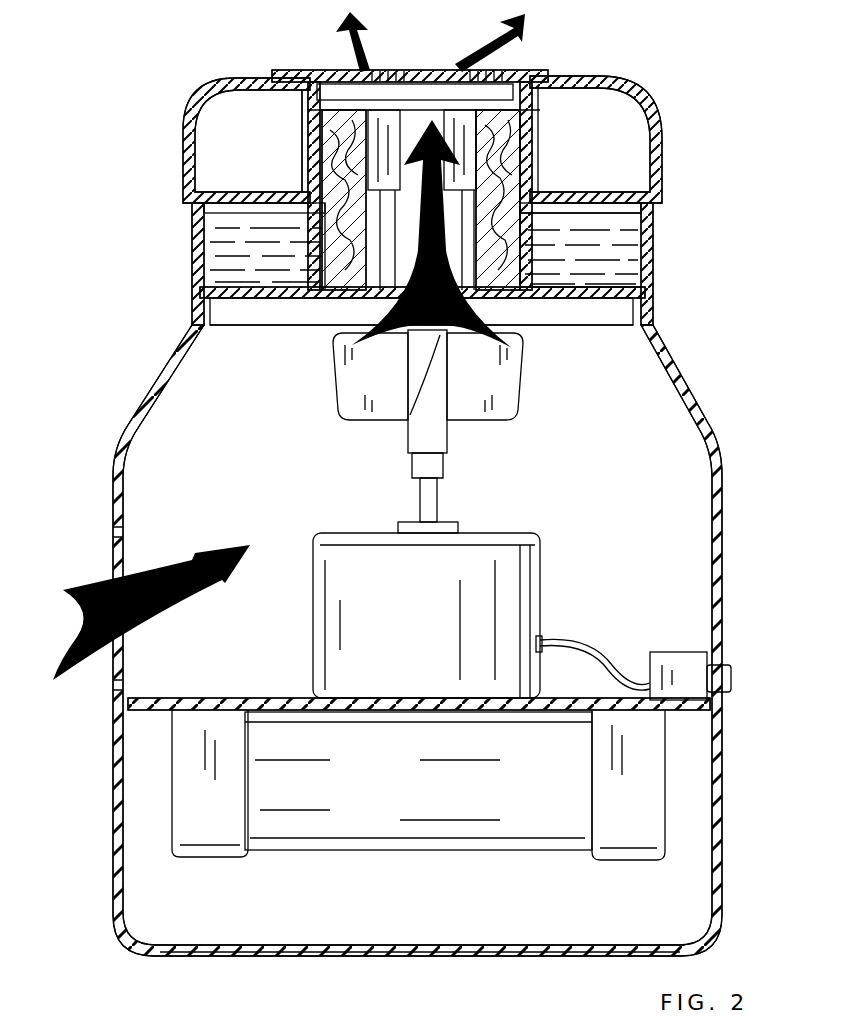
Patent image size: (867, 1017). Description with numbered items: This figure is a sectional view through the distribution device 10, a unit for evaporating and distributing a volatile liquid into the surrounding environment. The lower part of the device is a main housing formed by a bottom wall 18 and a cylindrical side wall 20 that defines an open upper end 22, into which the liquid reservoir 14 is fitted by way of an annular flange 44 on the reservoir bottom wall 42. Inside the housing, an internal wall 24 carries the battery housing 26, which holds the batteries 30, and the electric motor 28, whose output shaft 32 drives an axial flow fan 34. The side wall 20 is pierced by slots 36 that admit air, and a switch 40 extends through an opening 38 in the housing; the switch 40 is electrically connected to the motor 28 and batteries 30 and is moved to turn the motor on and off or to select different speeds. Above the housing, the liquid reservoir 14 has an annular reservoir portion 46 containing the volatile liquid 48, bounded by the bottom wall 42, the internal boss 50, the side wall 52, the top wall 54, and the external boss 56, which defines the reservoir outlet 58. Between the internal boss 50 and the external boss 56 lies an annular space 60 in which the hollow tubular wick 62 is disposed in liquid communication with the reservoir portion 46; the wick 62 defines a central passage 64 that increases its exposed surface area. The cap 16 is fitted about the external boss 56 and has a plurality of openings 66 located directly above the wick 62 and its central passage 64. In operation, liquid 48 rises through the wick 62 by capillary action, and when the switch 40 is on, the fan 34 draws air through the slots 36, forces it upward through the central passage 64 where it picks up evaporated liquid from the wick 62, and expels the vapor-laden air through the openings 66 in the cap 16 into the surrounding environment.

The distribution device 10 is at (124, 78).
The liquid reservoir 14 is at (665, 243).
The cap 16 is at (646, 82).
The bottom wall 18 is at (400, 945).
The side wall 20 is at (722, 506).
The open upper end 22 is at (654, 320).
The internal wall 24 is at (258, 698).
The battery housing 26 is at (192, 760).
The electric motor 28 is at (426, 615).
The batteries 30 is at (418, 781).
The output shaft 32 is at (437, 501).
The axial flow fan 34 is at (500, 423).
The slots 36 is at (117, 530).
The opening 38 is at (722, 665).
The switch 40 is at (678, 652).
The bottom wall 42 is at (272, 290).
The annular flange 44 is at (633, 312).
The reservoir portion 46 is at (616, 233).
The volatile liquid 48 is at (622, 268).
The internal boss 50 is at (380, 298).
The side wall 52 is at (205, 247).
The top wall 54 is at (262, 185).
The external boss 56 is at (308, 128).
The outlet 58 is at (380, 200).
The annular space 60 is at (520, 232).
The wick 62 is at (338, 148).
The central passage 64 is at (460, 136).
The openings 66 is at (346, 70).